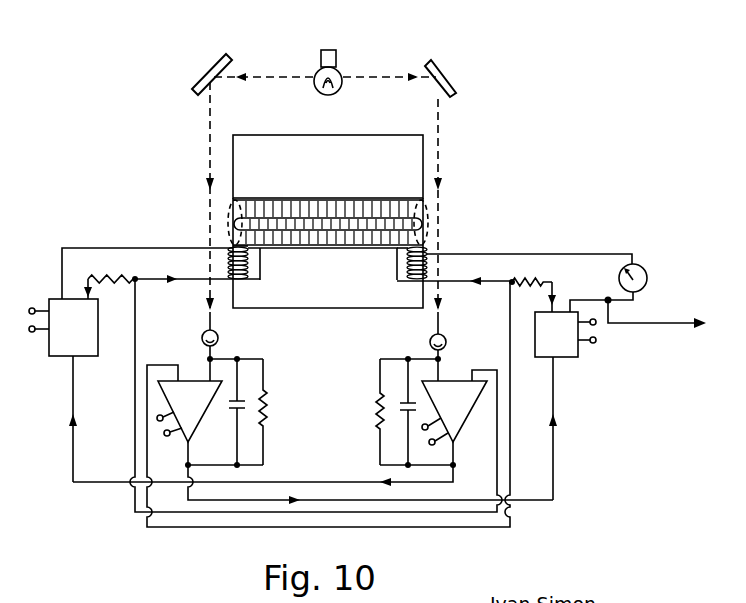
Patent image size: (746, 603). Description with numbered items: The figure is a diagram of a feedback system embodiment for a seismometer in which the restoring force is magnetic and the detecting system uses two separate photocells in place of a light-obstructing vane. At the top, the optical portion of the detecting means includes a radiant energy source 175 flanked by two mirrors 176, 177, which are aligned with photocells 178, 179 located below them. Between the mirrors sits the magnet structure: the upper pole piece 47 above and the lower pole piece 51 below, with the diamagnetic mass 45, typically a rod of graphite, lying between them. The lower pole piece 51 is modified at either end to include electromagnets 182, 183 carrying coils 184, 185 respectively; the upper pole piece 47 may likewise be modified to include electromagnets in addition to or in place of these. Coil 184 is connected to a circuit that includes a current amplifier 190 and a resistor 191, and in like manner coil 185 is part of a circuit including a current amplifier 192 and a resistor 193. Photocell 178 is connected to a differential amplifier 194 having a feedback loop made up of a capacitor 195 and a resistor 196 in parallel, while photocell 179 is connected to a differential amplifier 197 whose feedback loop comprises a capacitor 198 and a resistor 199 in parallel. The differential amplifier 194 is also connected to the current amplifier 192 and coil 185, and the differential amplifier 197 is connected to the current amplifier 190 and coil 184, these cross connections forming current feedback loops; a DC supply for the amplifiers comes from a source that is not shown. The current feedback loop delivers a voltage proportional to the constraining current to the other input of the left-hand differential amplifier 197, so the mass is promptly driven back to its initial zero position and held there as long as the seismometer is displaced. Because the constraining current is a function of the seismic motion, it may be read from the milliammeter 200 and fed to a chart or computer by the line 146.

The mirror 177 is at (212, 65).
The mirror 176 is at (445, 65).
The radiant energy source 175 is at (338, 91).
The upper pole piece 47 is at (379, 170).
The diamagnetic mass 45 is at (380, 228).
The electromagnet 183 is at (232, 246).
The electromagnet 182 is at (427, 251).
The coil 185 is at (230, 257).
The coil 184 is at (426, 262).
The resistor 193 is at (111, 273).
The resistor 191 is at (538, 280).
The milliammeter 200 is at (650, 274).
The line 146 is at (664, 322).
The current amplifier 192 is at (91, 339).
The current amplifier 190 is at (574, 345).
The lower pole piece 51 is at (379, 295).
The photocell 179 is at (203, 333).
The photocell 178 is at (445, 336).
The differential amplifier 197 is at (206, 407).
The differential amplifier 194 is at (470, 412).
The capacitor 198 is at (233, 412).
The resistor 199 is at (267, 410).
The resistor 196 is at (376, 398).
The capacitor 195 is at (400, 412).